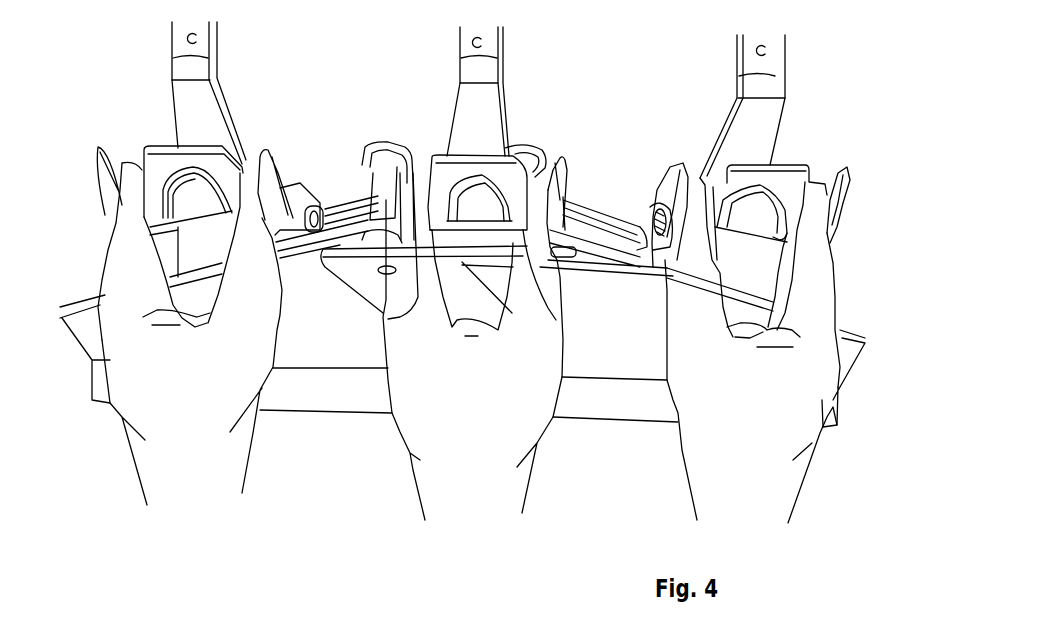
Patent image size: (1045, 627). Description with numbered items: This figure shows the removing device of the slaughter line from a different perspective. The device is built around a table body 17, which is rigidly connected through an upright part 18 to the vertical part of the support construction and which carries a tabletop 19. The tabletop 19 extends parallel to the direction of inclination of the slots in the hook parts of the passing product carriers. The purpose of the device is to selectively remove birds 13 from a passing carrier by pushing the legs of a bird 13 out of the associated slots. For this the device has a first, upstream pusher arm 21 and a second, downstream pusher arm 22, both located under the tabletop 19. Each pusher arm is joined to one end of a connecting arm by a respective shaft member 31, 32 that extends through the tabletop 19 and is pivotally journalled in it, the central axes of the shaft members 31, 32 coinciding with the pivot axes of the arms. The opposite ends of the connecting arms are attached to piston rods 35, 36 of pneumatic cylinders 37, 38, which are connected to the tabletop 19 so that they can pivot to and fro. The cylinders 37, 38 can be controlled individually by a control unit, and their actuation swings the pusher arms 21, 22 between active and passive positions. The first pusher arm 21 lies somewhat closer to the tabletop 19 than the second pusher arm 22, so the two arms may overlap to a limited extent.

The bird 13 is at (235, 462).
The table body 17 is at (866, 304).
The upright part 18 is at (353, 398).
The tabletop 19 is at (607, 353).
The first, upstream pusher arm 21 is at (653, 215).
The second, downstream pusher arm 22 is at (460, 262).
The shaft member 31 is at (545, 202).
The shaft member 32 is at (383, 195).
The piston rod 35 is at (610, 222).
The piston rod 36 is at (327, 210).
The pneumatic cylinder 37 is at (760, 258).
The pneumatic cylinder 38 is at (190, 254).